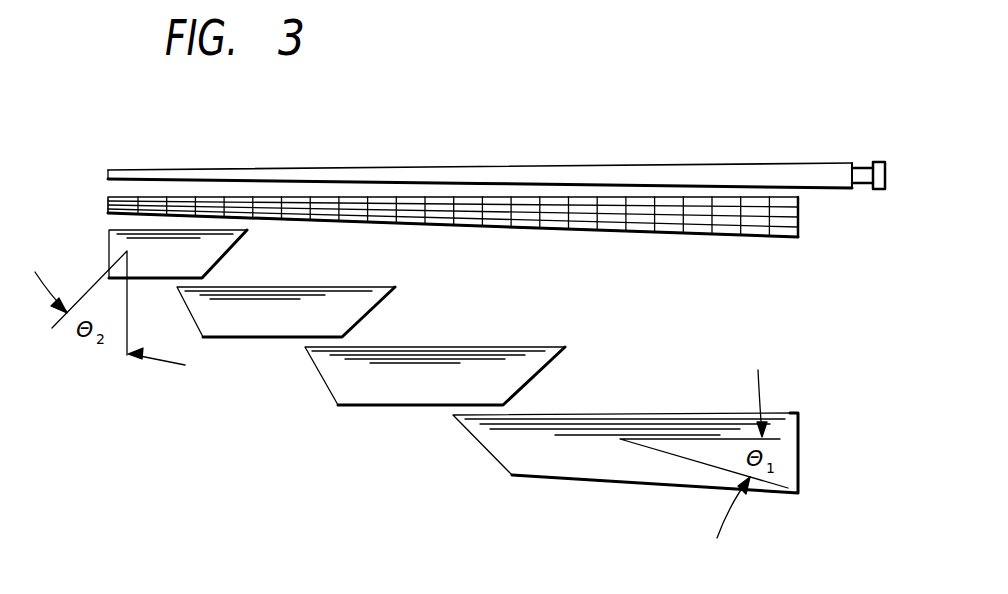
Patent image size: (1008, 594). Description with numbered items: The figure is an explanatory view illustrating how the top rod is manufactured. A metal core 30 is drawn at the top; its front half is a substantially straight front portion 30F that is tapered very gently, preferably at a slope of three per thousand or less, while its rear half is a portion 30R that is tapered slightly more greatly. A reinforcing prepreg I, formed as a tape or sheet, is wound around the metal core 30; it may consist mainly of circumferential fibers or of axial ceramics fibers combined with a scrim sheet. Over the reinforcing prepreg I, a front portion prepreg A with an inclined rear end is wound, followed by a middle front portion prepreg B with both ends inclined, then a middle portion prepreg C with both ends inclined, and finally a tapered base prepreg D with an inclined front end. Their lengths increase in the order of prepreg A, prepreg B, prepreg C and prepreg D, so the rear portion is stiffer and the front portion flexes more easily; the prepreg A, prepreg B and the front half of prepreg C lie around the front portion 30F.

The metal core 30 is at (670, 113).
The front portion of metal core 30F is at (383, 168).
The rear portion of metal core 30R is at (637, 165).
The reinforcing prepreg I is at (755, 222).
The front portion prepreg A is at (157, 268).
The middle front portion prepreg B is at (263, 330).
The middle portion prepreg C is at (402, 397).
The tapered base prepreg D is at (598, 473).